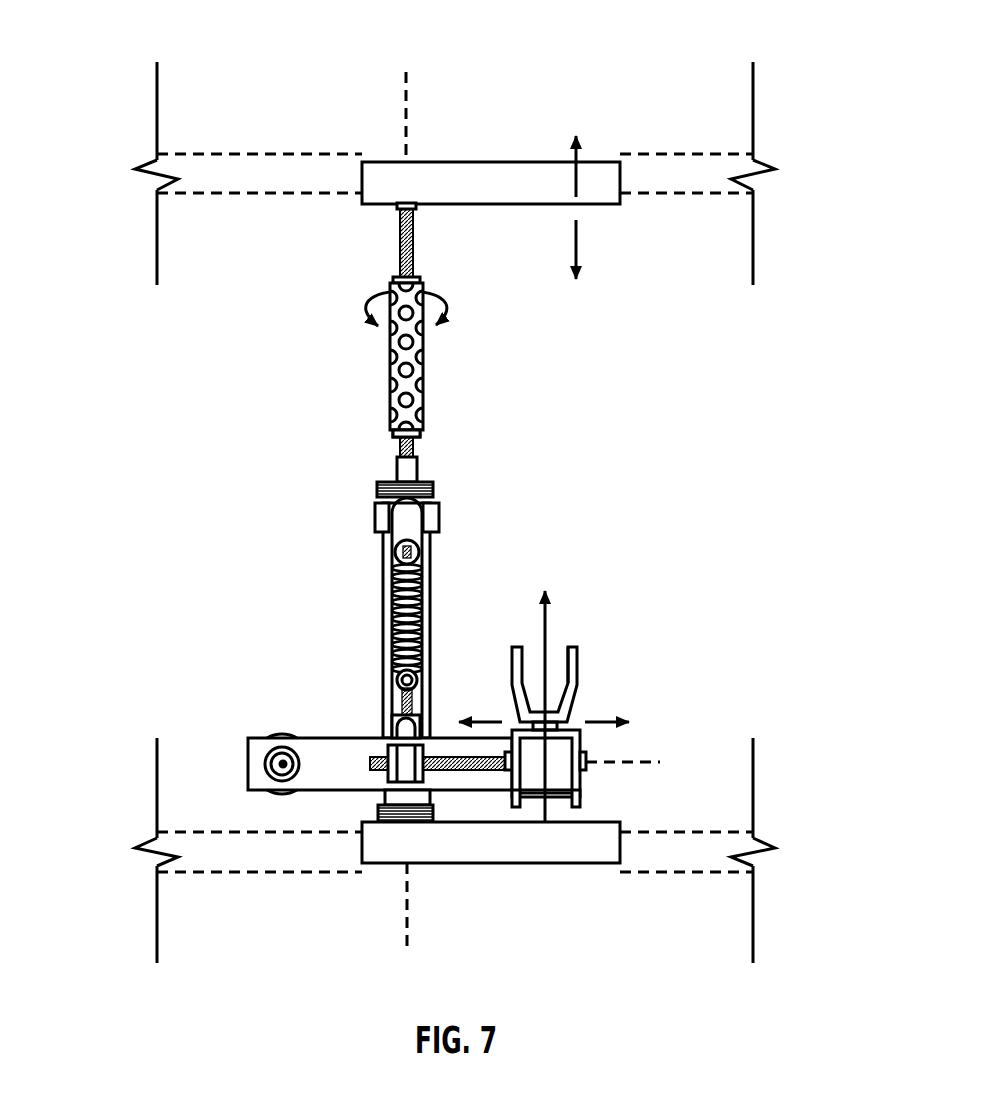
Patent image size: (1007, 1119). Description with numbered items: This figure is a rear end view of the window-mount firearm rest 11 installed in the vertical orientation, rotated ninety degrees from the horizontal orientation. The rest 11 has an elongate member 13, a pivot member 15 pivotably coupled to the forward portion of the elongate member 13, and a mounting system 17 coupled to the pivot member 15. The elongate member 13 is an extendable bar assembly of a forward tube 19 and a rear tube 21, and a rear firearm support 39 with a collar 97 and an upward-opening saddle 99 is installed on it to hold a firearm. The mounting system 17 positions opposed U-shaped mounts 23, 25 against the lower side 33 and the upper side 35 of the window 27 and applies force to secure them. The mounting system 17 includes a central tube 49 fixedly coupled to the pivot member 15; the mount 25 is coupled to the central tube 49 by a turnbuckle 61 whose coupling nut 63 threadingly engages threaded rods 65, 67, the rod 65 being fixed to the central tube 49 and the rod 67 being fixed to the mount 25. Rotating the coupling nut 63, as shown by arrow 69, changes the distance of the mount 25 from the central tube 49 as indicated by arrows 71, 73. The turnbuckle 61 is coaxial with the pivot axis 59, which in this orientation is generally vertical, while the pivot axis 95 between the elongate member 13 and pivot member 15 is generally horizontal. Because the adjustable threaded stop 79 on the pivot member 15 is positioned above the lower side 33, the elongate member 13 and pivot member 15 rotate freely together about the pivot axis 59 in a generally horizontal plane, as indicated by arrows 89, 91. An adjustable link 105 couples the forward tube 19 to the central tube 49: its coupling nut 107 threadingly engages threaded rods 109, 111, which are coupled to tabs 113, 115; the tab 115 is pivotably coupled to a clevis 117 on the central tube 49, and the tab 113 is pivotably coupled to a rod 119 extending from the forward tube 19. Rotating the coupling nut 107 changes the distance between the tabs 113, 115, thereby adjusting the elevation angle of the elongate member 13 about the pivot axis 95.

The window-mount firearm rest 11 is at (618, 30).
The elongate member 13 is at (515, 865).
The pivot member 15 is at (351, 810).
The mounting system 17 is at (394, 357).
The forward tube 19 is at (610, 776).
The rear tube 21 is at (548, 612).
The mount 23 is at (527, 857).
The mount 25 is at (446, 168).
The window 27 is at (300, 152).
The lower side 33 is at (225, 866).
The side 35 is at (221, 167).
The rear firearm support 39 is at (580, 671).
The central tube 49 is at (407, 605).
The pivot axis 59 is at (406, 72).
The turnbuckle 61 is at (389, 427).
The coupling nut 63 is at (412, 370).
The threaded rod 65 is at (413, 450).
The threaded rod 67 is at (414, 258).
The arrow 69 is at (362, 305).
The arrow 71 is at (578, 230).
The arrow 73 is at (578, 176).
The adjustable threaded stop 79 is at (270, 764).
The arrow 89 is at (482, 722).
The arrow 91 is at (600, 722).
The pivot axis 95 is at (660, 762).
The collar 97 is at (585, 803).
The saddle 99 is at (578, 648).
The adjustable link 105 is at (388, 613).
The coupling nut 107 is at (422, 597).
The threaded rod 109 is at (405, 700).
The threaded rod 111 is at (402, 553).
The tab 113 is at (407, 778).
The tab 115 is at (396, 520).
The clevis 117 is at (430, 512).
The rod 119 is at (483, 780).